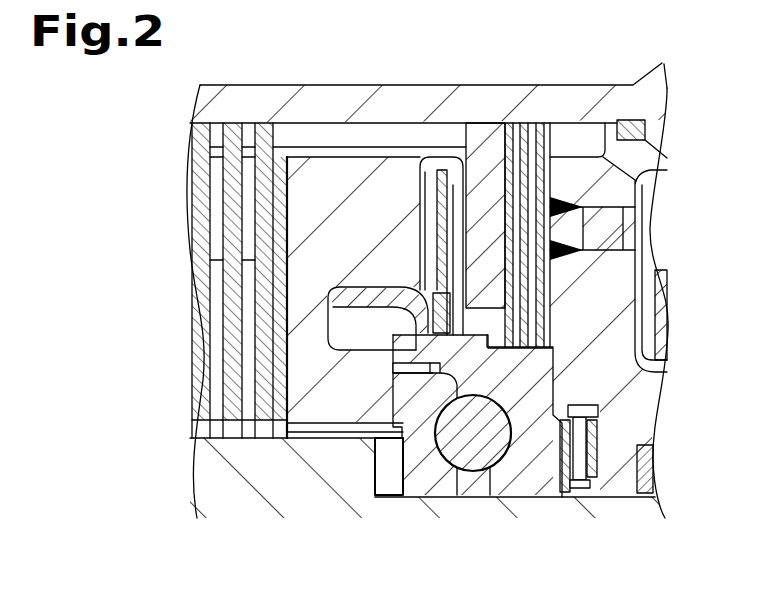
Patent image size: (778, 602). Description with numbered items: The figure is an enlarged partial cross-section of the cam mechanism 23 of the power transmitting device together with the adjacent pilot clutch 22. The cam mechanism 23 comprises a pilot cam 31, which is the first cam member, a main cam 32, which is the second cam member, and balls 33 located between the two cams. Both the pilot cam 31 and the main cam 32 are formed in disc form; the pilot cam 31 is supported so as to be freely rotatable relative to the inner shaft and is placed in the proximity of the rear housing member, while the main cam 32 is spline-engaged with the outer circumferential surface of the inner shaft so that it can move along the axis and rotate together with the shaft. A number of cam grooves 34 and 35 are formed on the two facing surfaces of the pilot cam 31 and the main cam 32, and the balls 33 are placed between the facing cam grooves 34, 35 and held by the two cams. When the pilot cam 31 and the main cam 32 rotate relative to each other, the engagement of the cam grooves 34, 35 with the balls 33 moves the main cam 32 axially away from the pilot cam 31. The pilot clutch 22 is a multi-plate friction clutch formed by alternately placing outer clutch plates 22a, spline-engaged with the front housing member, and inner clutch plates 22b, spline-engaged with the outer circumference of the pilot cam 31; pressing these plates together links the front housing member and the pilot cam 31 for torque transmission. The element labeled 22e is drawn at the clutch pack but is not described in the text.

The pilot clutch 22 is at (524, 181).
The clutch pressure block 22e is at (482, 122).
The outer clutch plates 22a is at (536, 122).
The inner clutch plates 22b is at (549, 202).
The cam mechanism 23 is at (468, 460).
The pilot cam 31 is at (525, 497).
The main cam 32 is at (432, 497).
The balls 33 is at (474, 507).
The cam grooves 34 is at (500, 418).
The cam grooves 35 is at (447, 418).